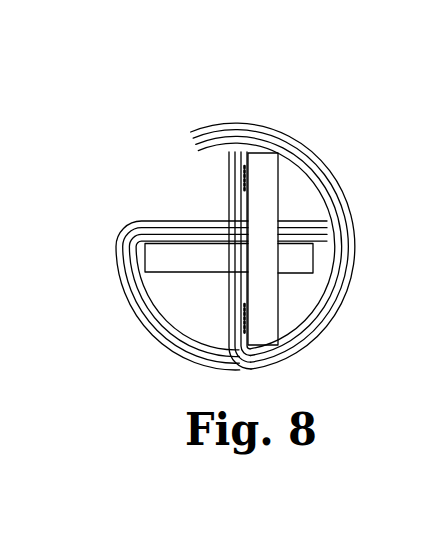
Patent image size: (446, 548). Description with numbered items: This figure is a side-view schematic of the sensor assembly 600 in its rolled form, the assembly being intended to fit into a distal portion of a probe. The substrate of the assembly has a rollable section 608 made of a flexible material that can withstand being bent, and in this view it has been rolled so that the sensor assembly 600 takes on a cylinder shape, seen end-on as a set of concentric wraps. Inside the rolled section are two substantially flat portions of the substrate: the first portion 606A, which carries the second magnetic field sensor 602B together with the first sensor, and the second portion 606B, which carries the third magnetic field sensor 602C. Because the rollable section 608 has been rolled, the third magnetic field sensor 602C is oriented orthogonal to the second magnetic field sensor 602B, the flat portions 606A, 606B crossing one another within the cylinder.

The sensor assembly 600 is at (159, 88).
The second magnetic field sensor 602B is at (270, 157).
The third magnetic field sensor 602C is at (306, 257).
The first portion 606A is at (229, 185).
The second portion 606B is at (152, 221).
The rollable section 608 is at (347, 190).